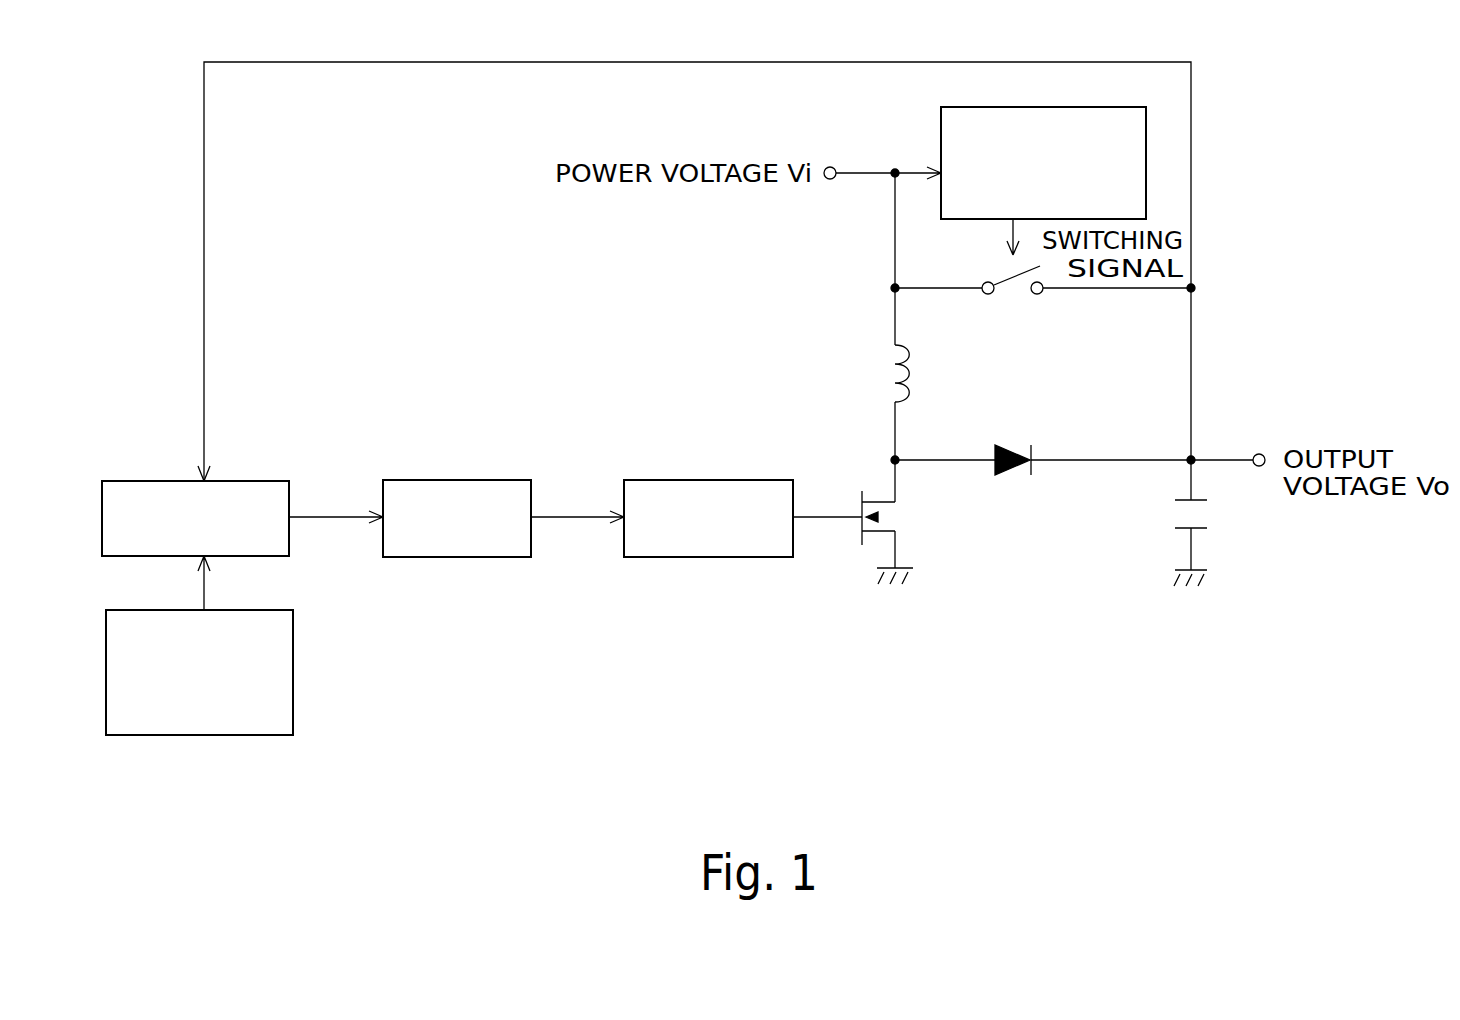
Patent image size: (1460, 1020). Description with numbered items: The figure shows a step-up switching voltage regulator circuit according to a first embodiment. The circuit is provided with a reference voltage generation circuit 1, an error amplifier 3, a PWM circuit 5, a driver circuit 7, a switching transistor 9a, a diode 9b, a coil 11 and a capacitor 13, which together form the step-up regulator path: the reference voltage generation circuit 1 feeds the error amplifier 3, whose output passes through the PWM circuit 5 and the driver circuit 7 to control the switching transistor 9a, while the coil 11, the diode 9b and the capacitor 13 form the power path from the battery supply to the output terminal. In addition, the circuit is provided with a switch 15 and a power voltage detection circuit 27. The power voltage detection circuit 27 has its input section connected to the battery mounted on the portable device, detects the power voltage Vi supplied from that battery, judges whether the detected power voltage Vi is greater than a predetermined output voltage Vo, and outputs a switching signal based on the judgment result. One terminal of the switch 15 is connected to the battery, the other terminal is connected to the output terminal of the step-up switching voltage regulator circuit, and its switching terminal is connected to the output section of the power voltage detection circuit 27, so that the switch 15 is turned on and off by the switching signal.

The reference voltage generation circuit 1 is at (293, 645).
The error amplifier 3 is at (235, 481).
The PWM circuit 5 is at (468, 480).
The driver circuit 7 is at (683, 557).
The switching transistor 9a is at (862, 538).
The diode 9b is at (1010, 445).
The coil 11 is at (885, 370).
The capacitor 13 is at (1184, 530).
The switch 15 is at (1040, 295).
The power voltage detection circuit 27 is at (1020, 107).